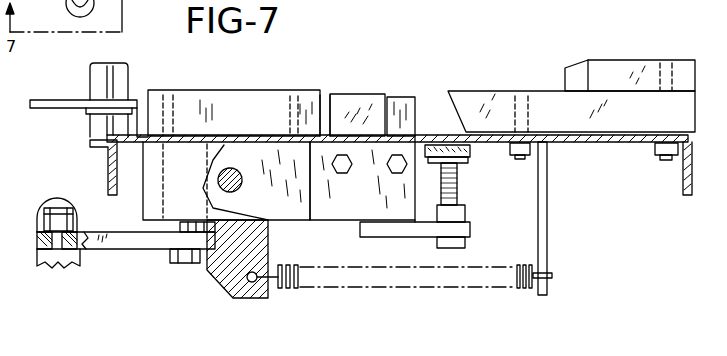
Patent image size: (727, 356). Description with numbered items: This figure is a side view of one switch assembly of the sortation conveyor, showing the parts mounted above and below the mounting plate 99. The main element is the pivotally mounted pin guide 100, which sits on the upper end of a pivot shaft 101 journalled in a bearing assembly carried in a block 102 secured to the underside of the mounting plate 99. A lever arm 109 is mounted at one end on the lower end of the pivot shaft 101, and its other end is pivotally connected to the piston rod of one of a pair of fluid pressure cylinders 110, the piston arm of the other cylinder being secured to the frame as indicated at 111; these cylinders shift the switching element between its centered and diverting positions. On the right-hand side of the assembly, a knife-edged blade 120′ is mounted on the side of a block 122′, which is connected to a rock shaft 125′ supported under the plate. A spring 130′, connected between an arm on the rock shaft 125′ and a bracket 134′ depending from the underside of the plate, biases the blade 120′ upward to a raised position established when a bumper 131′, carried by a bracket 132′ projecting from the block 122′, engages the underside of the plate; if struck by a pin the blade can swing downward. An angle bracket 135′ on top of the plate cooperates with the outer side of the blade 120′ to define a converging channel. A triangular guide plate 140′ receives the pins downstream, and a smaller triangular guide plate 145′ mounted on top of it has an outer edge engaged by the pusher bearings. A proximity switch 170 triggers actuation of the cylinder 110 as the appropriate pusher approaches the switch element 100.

The mounting plate 99 is at (620, 143).
The pivotally mounted pin guide 100 is at (250, 88).
The pivot shaft 101 is at (182, 264).
The block 102 is at (150, 203).
The lever arm 109 is at (122, 250).
The fluid pressure cylinder 110 is at (48, 212).
The frame securement of piston arm 111 is at (35, 239).
The knife-edged blade 120′ is at (408, 108).
The block 122′ is at (322, 212).
The rock shaft 125′ is at (232, 168).
The spring 130′ is at (515, 290).
The bumper 131′ is at (470, 150).
The bracket 132′ is at (383, 226).
The bracket 134′ is at (548, 220).
The angle bracket 135′ is at (358, 95).
The triangular guide plate 140′ is at (472, 102).
The smaller triangular guide plate 145′ is at (615, 62).
The proximity switch 170 is at (96, 80).